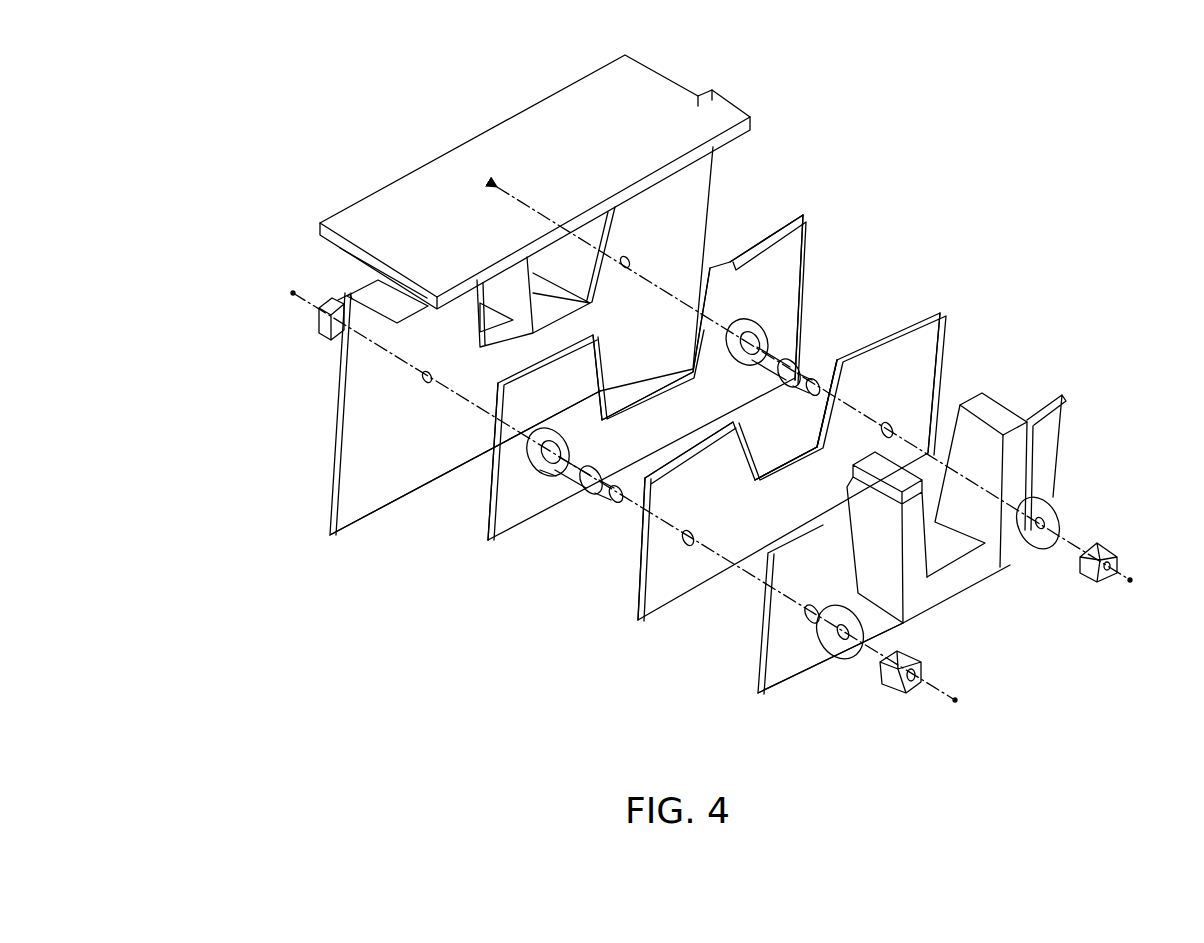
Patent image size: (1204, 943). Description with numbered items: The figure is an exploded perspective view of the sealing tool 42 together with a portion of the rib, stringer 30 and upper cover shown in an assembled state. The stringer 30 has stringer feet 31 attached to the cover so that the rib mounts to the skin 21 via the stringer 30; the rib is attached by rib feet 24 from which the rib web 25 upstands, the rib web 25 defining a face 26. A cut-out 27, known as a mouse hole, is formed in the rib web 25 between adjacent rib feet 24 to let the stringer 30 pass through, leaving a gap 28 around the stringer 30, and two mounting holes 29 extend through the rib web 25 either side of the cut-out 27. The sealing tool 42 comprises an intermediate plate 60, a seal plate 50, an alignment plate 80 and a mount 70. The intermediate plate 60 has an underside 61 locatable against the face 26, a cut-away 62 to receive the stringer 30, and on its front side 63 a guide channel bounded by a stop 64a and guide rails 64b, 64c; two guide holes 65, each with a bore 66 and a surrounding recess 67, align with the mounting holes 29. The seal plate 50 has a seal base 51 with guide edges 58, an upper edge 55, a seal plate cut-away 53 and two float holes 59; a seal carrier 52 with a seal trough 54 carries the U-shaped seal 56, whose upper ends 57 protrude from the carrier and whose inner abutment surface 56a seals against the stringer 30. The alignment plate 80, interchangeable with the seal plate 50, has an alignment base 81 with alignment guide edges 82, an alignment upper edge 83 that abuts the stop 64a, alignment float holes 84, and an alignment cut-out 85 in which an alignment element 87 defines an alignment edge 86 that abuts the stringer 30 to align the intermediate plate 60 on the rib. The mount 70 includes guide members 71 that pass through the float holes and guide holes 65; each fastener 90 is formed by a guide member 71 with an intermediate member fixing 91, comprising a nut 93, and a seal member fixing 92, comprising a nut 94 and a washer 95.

The skin 21 is at (633, 82).
The rib feet 24 is at (722, 103).
The rib web 25 is at (331, 462).
The face 26 is at (376, 505).
The cut-out 27 is at (490, 290).
The gap 28 is at (485, 313).
The mounting holes 29 is at (425, 382).
The stringer 30 is at (567, 250).
The stringer feet 31 is at (352, 264).
The sealing tool 42 is at (1012, 178).
The seal plate 50 is at (1132, 392).
The seal base 51 is at (776, 640).
The seal carrier 52 is at (940, 597).
The seal plate cut-away 53 is at (941, 454).
The seal trough 54 is at (862, 566).
The upper edge 55 is at (1037, 407).
The seal 56 is at (987, 562).
The inner abutment surface 56a is at (942, 519).
The upper ends 57 is at (993, 413).
The guide edges 58 is at (1060, 462).
The float holes 59 is at (810, 606).
The intermediate plate 60 is at (902, 232).
The underside 61 is at (490, 508).
The cut-away 62 is at (643, 356).
The front side 63 is at (525, 507).
The stop 64a is at (770, 240).
The guide rail 64b is at (493, 445).
The guide rail 64c is at (801, 303).
The guide holes 65 is at (556, 445).
The bore 66 is at (546, 452).
The recess 67 is at (553, 472).
The mount 70 is at (558, 592).
The guide member 71 is at (602, 492).
The alignment plate 80 is at (1012, 292).
The alignment base 81 is at (940, 320).
The alignment guide edges 82 is at (948, 350).
The alignment upper edge 83 is at (895, 335).
The alignment float holes 84 is at (690, 533).
The alignment cut-out 85 is at (770, 450).
The alignment edge 86 is at (826, 417).
The alignment element 87 is at (796, 480).
The fastener 90 is at (216, 364).
The intermediate member fixing 91 is at (293, 293).
The seal member fixing 92 is at (1144, 502).
The nut 93 is at (316, 324).
The nut 94 is at (907, 692).
The washer 95 is at (830, 663).